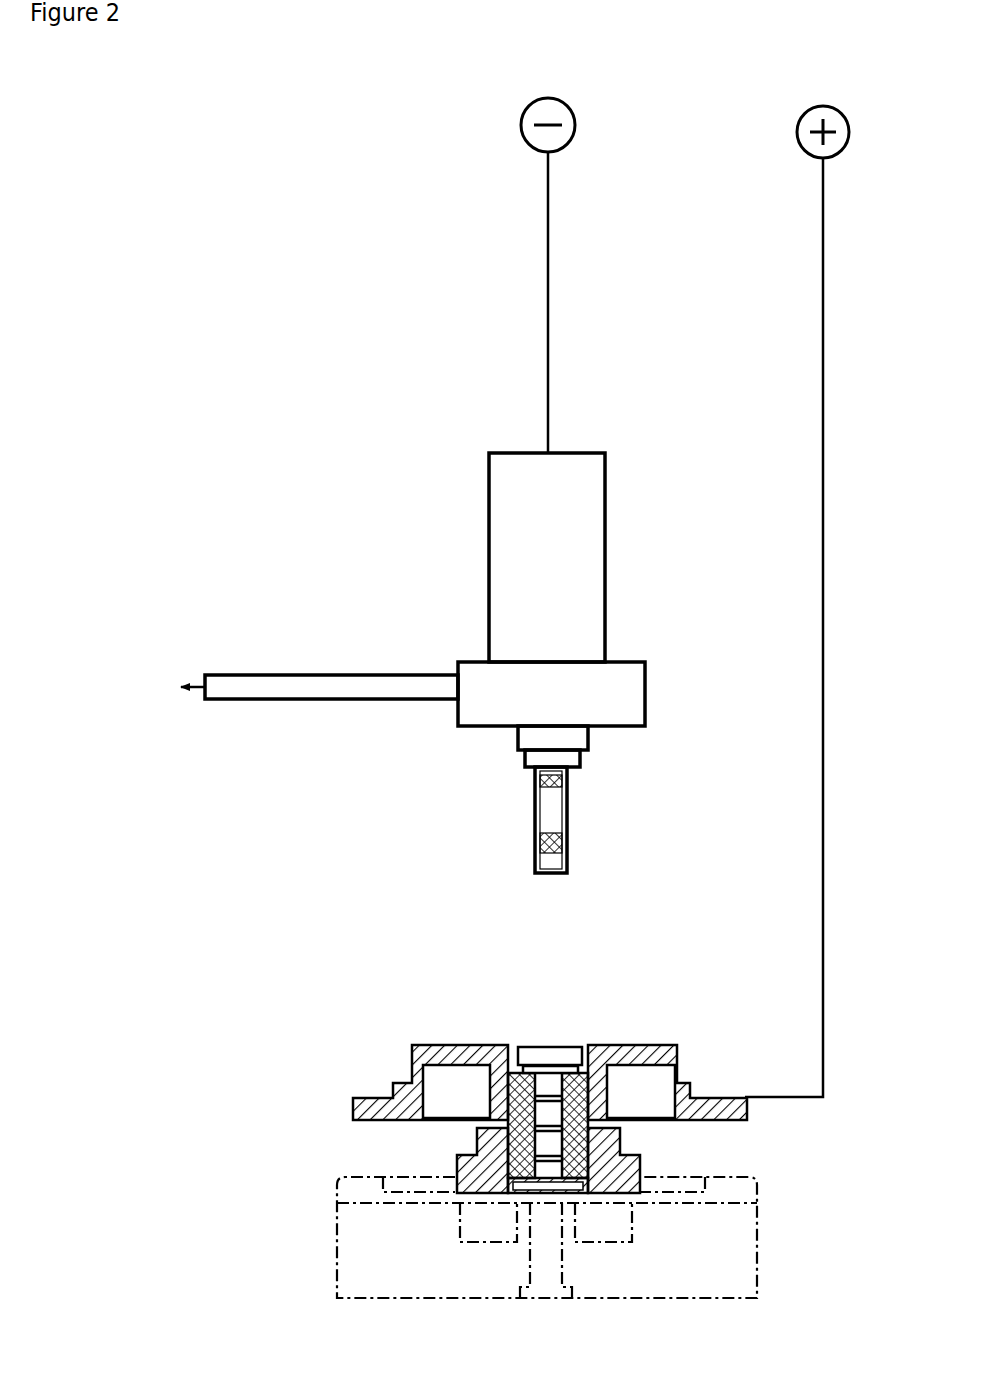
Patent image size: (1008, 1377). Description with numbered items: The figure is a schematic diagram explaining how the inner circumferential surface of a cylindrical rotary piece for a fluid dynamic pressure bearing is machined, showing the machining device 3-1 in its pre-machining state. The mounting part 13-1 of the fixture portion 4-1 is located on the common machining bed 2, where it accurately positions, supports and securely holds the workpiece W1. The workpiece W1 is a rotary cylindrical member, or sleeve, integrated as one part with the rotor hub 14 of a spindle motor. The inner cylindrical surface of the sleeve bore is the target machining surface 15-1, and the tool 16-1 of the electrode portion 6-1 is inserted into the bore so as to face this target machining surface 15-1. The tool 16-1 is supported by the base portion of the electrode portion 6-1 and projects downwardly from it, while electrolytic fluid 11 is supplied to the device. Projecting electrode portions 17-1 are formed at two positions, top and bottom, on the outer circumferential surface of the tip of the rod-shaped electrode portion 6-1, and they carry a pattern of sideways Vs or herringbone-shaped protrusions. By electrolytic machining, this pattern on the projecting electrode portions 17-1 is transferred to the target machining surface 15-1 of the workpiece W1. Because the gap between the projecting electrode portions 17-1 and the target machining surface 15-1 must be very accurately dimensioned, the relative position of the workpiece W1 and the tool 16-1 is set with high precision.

The electrode portion 6-1 is at (622, 646).
The electrolytic fluid supply pipe 11 is at (254, 678).
The tool 16-1 is at (572, 814).
The projecting electrode portions 17-1 is at (537, 846).
The machining device 3-1 is at (372, 918).
The rotor hub 14 is at (473, 1045).
The target machining surface 15-1 is at (556, 1065).
The workpiece W1 is at (658, 1046).
The mounting part 13-1 is at (452, 1153).
The fixture portion 4-1 is at (386, 1162).
The machining bed 2 is at (757, 1250).